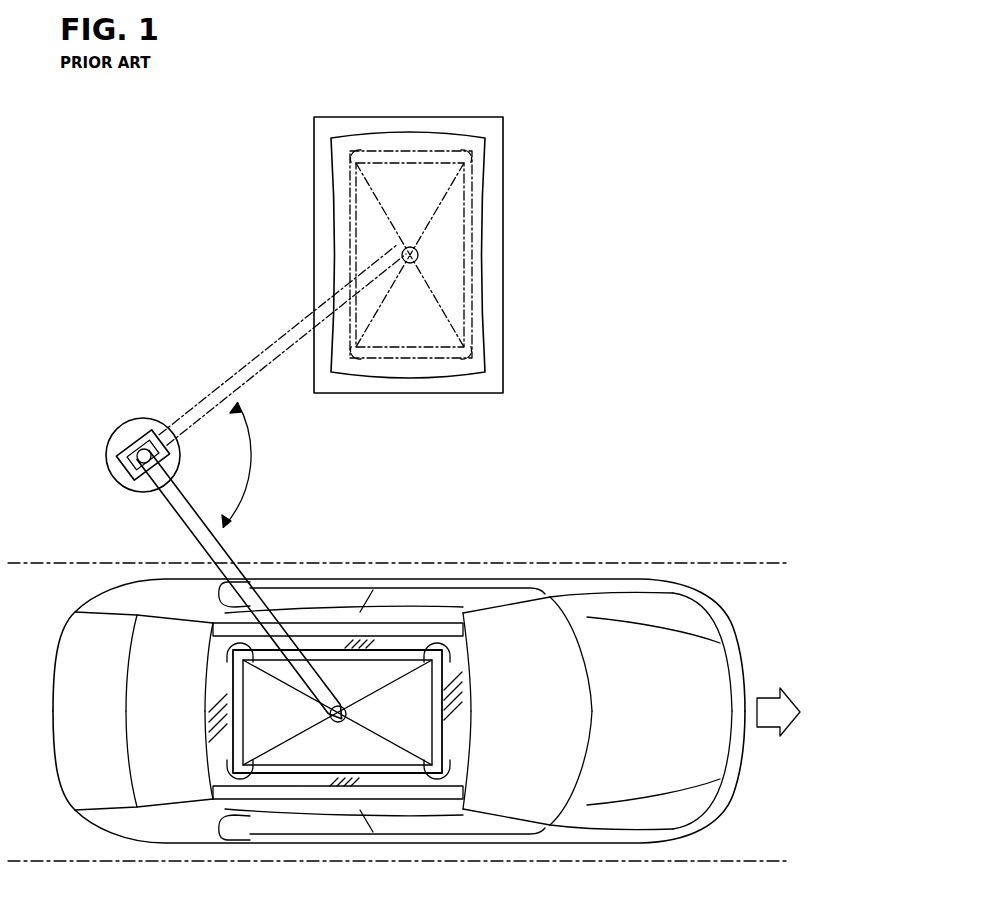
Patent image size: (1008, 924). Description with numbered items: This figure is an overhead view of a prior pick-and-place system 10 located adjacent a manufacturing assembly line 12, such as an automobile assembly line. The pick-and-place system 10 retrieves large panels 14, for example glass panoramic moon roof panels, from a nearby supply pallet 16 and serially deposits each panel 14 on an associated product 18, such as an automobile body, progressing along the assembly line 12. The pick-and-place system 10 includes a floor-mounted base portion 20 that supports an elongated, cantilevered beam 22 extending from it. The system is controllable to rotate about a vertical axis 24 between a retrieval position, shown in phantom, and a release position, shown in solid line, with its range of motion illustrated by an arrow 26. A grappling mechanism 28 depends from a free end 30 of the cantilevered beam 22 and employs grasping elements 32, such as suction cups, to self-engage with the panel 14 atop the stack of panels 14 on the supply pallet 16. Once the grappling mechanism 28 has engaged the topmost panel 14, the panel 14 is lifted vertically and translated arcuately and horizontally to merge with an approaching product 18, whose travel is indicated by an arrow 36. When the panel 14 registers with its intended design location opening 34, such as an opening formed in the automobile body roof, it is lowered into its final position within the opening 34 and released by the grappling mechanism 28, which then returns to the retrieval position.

The pick-and-place system 10 is at (112, 322).
The assembly line 12 is at (735, 568).
The panel 14 is at (428, 138).
The supply pallet 16 is at (345, 116).
The product 18 is at (70, 606).
The base portion 20 is at (129, 430).
The cantilevered beam 22 is at (273, 347).
The vertical axis 24 is at (112, 449).
The arrow 26 is at (255, 463).
The grappling mechanism 28 is at (466, 214).
The free end 30 is at (420, 254).
The grasping elements 32 is at (356, 138).
The design location opening 34 is at (210, 778).
The arrow 36 is at (787, 703).